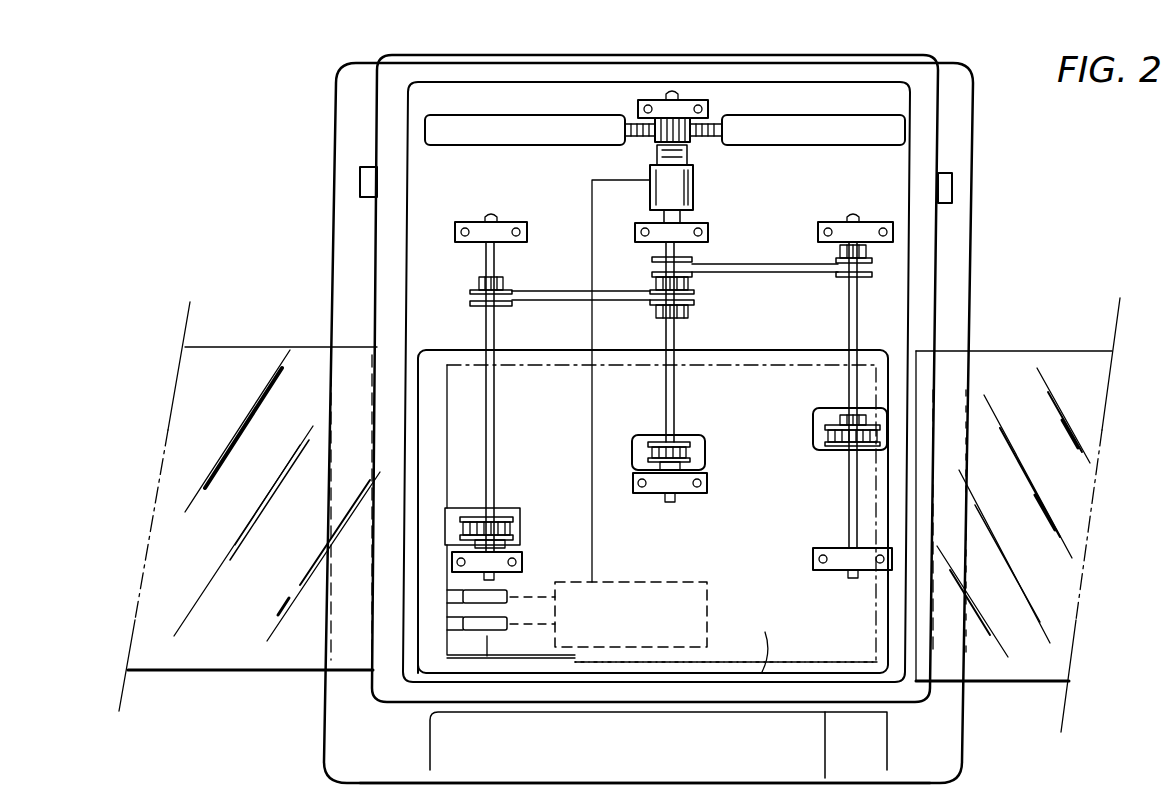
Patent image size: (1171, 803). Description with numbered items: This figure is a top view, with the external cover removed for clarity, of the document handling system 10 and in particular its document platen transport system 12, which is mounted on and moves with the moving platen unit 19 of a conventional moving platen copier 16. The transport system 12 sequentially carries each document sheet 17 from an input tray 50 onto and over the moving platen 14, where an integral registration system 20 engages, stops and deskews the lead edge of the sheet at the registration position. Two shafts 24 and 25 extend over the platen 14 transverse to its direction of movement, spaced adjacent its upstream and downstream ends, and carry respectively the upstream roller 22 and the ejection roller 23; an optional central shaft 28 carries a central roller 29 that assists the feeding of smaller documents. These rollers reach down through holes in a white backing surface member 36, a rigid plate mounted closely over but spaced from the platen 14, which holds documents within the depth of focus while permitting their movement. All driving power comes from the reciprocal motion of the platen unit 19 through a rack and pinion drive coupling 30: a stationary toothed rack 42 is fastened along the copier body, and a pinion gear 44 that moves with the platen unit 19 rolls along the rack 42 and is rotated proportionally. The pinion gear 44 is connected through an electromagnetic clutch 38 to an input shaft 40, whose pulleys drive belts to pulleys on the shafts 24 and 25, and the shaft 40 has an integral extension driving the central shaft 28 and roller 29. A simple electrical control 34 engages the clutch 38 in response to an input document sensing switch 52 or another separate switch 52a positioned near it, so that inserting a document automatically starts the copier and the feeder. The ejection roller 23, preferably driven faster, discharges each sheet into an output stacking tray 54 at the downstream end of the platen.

The document handling system 10 is at (862, 182).
The document platen transport system 12 is at (624, 553).
The moving platen 14 is at (428, 665).
The moving platen copier 16 is at (650, 757).
The document sheet 17 is at (740, 664).
The moving platen unit 19 is at (575, 670).
The registration system 20 is at (798, 620).
The upstream roller 22 is at (512, 530).
The ejection roller 23 is at (843, 440).
The upstream shaft 24 is at (493, 441).
The downstream shaft 25 is at (848, 310).
The central shaft 28 is at (668, 397).
The central roller 29 is at (700, 442).
The rack and pinion drive coupling 30 is at (665, 163).
The electrical control 34 is at (680, 582).
The white backing surface member 36 is at (768, 640).
The electromagnetic clutch 38 is at (682, 188).
The input shaft 40 is at (668, 218).
The toothed rack 42 is at (625, 131).
The pinion gear 44 is at (640, 105).
The input tray 50 is at (245, 660).
The input document sensing switch 52 is at (470, 630).
The separate switch 52a is at (463, 598).
The output stacking tray 54 is at (1040, 667).